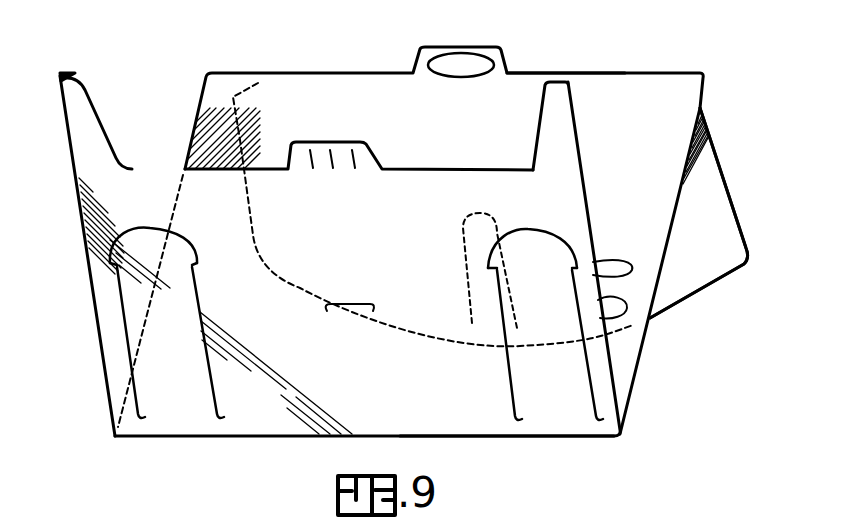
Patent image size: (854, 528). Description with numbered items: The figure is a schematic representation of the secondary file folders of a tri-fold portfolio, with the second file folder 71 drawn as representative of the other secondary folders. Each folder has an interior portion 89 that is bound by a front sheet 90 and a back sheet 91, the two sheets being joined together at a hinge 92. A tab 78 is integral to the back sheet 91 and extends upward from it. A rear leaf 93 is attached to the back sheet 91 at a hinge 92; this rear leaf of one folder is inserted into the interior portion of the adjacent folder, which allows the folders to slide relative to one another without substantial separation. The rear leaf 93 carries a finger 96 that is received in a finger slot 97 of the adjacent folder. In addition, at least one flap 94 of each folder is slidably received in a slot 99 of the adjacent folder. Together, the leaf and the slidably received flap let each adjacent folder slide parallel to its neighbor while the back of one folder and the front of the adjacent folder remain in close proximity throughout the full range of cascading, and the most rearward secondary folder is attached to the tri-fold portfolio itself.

The second file folder 71 is at (677, 389).
The tab 78 is at (482, 57).
The interior portion 89 is at (150, 102).
The front sheet 90 is at (403, 244).
The back sheet 91 is at (466, 146).
The hinge 92 is at (626, 73).
The rear leaf 93 is at (687, 298).
The flap 94 is at (182, 368).
The finger 96 is at (487, 216).
The finger slot 97 is at (345, 303).
The slot 99 is at (199, 271).